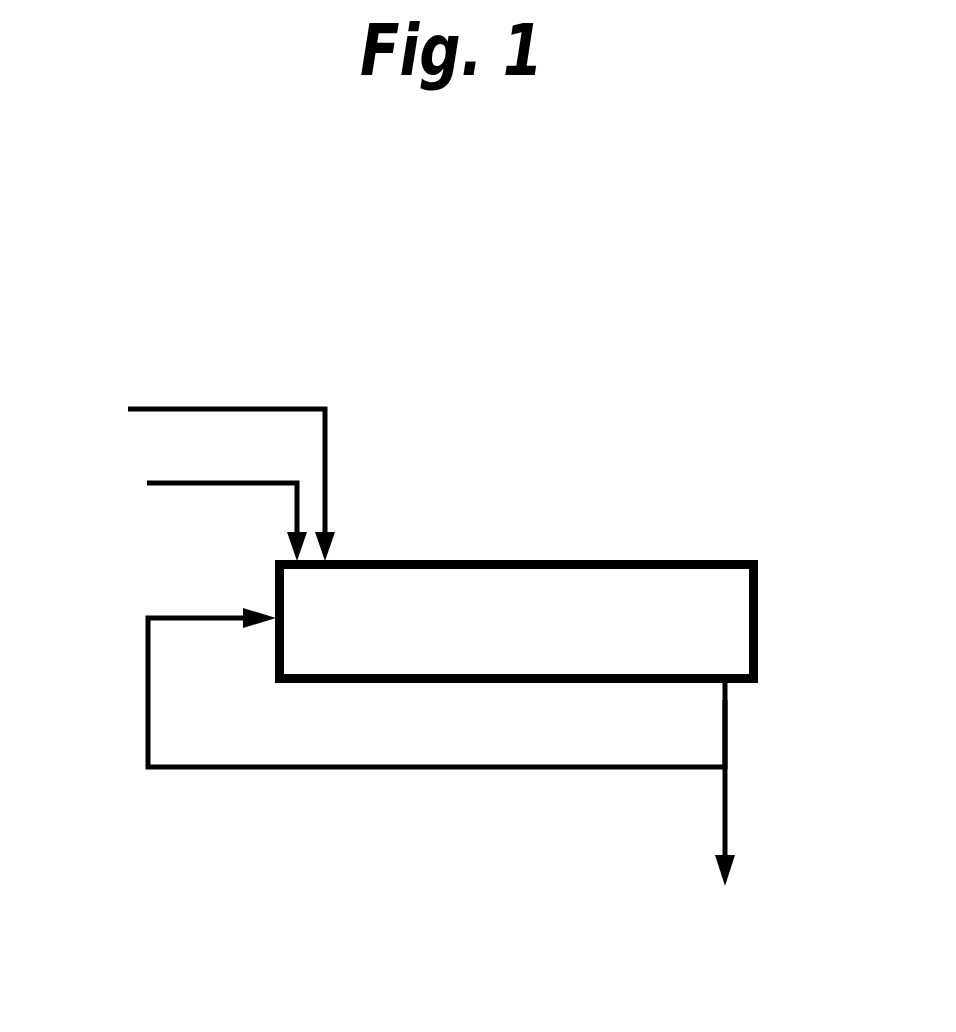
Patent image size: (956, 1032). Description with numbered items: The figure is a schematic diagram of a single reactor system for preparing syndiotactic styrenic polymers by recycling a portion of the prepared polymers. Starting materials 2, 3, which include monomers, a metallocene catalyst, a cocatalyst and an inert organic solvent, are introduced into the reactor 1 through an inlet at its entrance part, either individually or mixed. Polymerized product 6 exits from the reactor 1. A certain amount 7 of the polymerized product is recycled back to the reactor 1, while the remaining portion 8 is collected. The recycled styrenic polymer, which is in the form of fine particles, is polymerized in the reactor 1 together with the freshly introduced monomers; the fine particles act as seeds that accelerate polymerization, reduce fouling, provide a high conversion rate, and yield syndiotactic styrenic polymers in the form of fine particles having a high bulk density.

The reactor 1 is at (583, 593).
The starting material 2 is at (199, 511).
The starting material 3 is at (213, 471).
The polymerized product 6 is at (728, 770).
The recycled amount of polymerized product 7 is at (488, 752).
The remaining portion of polymerized product 8 is at (728, 845).